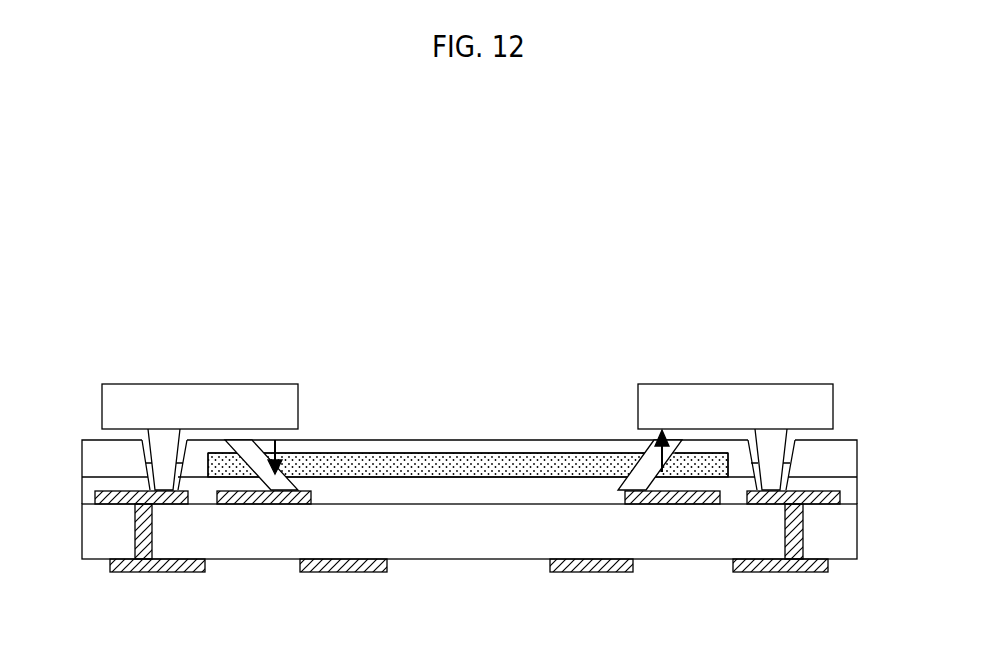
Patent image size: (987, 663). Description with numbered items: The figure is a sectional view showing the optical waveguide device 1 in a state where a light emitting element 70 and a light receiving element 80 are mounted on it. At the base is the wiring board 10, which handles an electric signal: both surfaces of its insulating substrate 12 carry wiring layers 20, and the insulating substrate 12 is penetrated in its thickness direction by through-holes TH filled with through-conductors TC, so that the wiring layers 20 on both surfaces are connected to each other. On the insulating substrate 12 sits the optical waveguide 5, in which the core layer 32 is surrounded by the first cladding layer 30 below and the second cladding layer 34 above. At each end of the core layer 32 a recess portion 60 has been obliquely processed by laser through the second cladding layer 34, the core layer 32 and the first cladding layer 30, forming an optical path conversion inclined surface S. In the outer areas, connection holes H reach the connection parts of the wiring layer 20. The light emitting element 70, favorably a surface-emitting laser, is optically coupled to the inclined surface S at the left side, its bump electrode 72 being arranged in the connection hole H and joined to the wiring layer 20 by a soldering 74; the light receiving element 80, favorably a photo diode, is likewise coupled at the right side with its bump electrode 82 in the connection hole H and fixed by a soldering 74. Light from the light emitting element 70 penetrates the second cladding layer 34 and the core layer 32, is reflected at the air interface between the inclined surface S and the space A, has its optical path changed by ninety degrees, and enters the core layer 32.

The optical waveguide device 1 is at (437, 296).
The optical waveguide 5 is at (468, 410).
The wiring board 10 is at (525, 553).
The insulating substrate 12 is at (838, 542).
The wiring layer 20 is at (833, 503).
The first cladding layer 30 is at (483, 493).
The core layer 32 is at (470, 467).
The second cladding layer 34 is at (455, 447).
The recess portion 60 is at (233, 465).
The light emitting element 70 is at (185, 397).
The bump electrode 72 is at (160, 447).
The soldering 74 is at (146, 477).
The light receiving element 80 is at (722, 397).
The bump electrode 82 is at (775, 448).
The connection hole H is at (193, 448).
The space A is at (253, 462).
The optical path conversion inclined surface S is at (270, 468).
The through-hole TH is at (802, 527).
The through-conductor TC is at (795, 540).